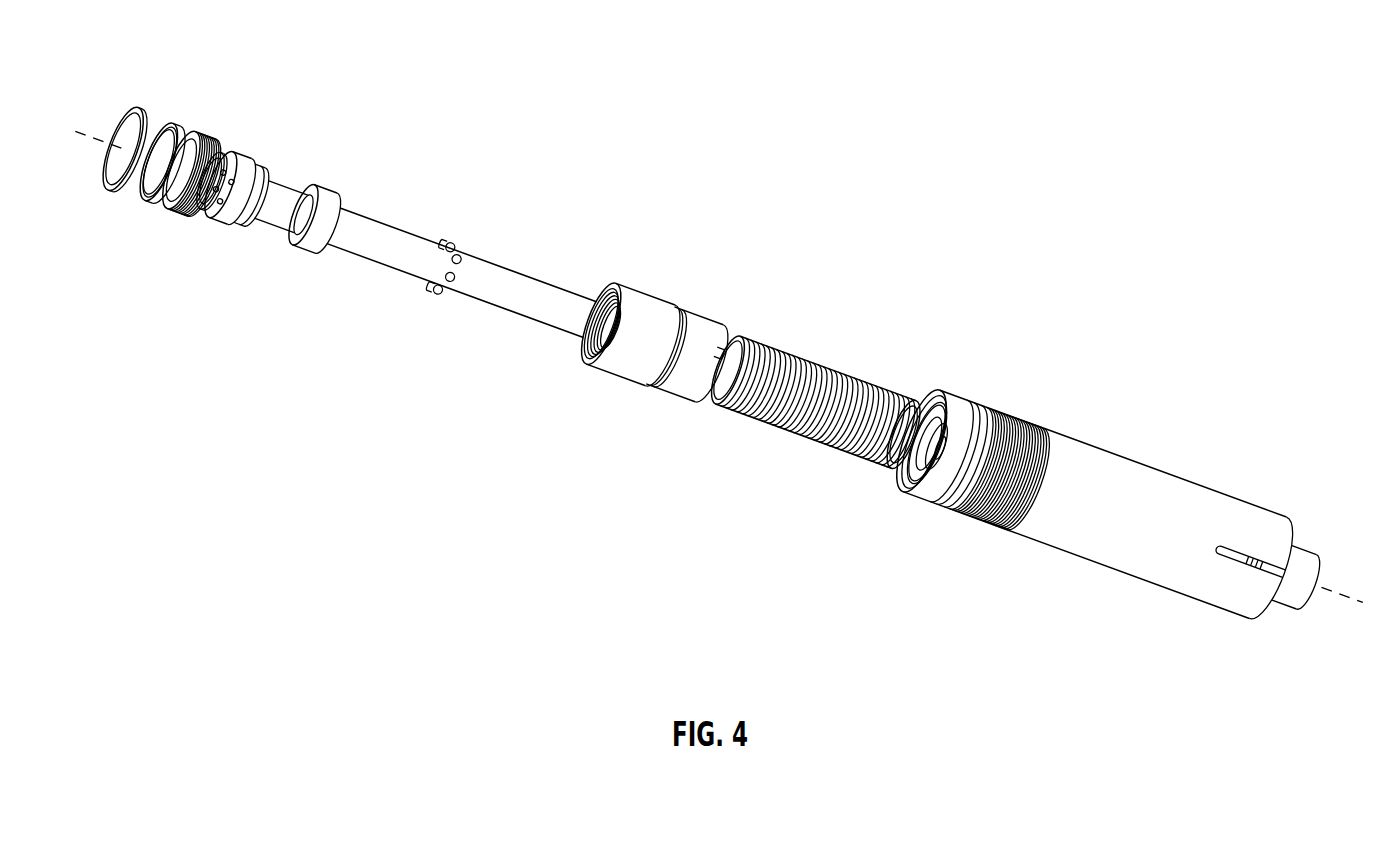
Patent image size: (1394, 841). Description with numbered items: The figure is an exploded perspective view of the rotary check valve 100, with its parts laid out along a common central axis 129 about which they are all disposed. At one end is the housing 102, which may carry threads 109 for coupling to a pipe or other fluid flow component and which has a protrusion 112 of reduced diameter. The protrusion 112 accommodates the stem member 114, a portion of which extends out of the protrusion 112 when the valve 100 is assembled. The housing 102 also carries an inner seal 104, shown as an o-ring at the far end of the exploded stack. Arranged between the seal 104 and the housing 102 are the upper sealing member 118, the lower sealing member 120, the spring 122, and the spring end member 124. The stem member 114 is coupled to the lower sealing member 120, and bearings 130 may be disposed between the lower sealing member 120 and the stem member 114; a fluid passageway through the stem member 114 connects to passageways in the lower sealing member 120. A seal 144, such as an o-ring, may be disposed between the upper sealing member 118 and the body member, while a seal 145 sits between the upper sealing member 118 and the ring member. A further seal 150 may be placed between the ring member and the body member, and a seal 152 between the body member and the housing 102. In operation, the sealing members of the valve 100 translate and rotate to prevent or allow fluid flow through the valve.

The rotary check valve 100 is at (175, 49).
The housing 102 is at (1150, 473).
The inner seal 104 is at (140, 114).
The threads 109 is at (1018, 418).
The protrusion 112 is at (1300, 554).
The stem member 114 is at (514, 293).
The upper sealing member 118 is at (242, 164).
The lower sealing member 120 is at (284, 183).
The spring 122 is at (811, 367).
The spring end member 124 is at (920, 407).
The central axis 129 is at (1338, 603).
The bearings 130 is at (455, 248).
The seal 144 is at (245, 226).
The seal 145 is at (189, 211).
The seal 150 is at (140, 203).
The seal 152 is at (664, 400).